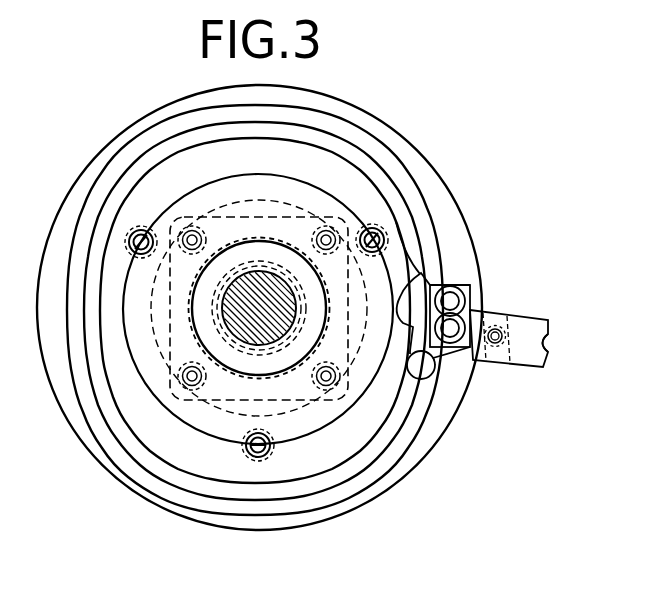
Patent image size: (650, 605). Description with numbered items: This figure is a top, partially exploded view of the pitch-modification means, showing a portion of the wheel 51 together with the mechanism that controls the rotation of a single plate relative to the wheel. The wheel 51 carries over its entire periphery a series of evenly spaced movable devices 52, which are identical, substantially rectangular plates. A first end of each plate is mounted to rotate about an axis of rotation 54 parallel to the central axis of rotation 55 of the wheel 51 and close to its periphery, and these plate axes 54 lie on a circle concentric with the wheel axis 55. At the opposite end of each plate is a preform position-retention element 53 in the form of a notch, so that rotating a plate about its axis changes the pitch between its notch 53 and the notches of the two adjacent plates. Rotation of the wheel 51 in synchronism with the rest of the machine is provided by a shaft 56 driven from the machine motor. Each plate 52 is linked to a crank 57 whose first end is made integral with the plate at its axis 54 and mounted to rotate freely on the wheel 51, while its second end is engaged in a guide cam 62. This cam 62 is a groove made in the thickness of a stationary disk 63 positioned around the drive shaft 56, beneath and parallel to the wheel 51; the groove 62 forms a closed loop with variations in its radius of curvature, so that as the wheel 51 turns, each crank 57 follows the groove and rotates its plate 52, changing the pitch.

The wheel 51 is at (436, 284).
The movable device 52 is at (528, 323).
The preform position-retention element 53 is at (539, 341).
The axis of rotation of the plate 54 is at (462, 342).
The central axis of rotation of the wheel 55 is at (250, 307).
The shaft 56 is at (263, 284).
The crank 57 is at (436, 358).
The guide cam 62 is at (305, 480).
The disk 63 is at (370, 483).